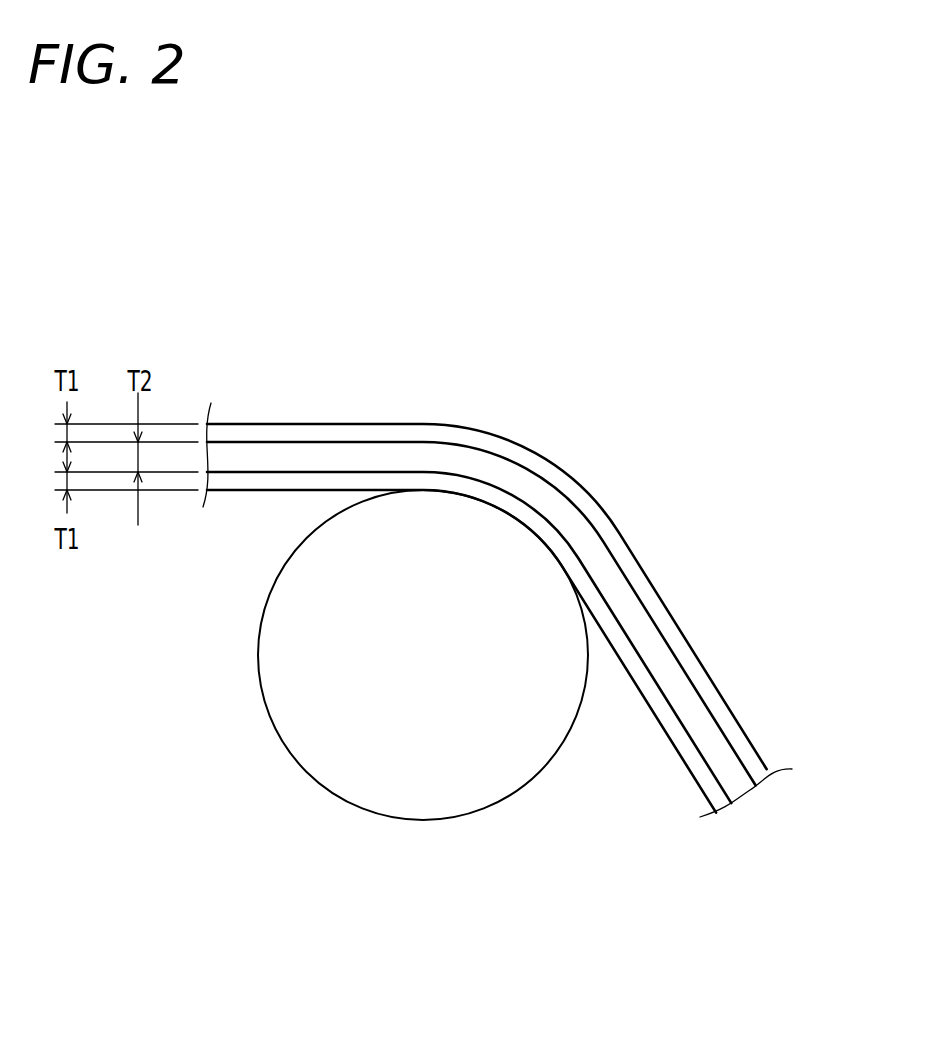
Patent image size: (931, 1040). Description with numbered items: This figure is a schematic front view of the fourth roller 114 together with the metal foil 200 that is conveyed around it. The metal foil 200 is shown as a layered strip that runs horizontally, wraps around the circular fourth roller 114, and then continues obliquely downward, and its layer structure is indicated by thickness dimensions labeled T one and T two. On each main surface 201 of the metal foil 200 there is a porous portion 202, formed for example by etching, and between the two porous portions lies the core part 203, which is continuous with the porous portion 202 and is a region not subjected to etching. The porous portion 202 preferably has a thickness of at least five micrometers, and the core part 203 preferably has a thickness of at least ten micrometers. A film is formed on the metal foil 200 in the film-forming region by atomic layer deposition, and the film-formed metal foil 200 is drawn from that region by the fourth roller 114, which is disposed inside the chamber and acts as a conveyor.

The fourth roller 114 is at (334, 790).
The metal foil 200 is at (499, 584).
The main surface 201 is at (714, 681).
The porous portion 202 is at (678, 637).
The core part 203 is at (567, 512).